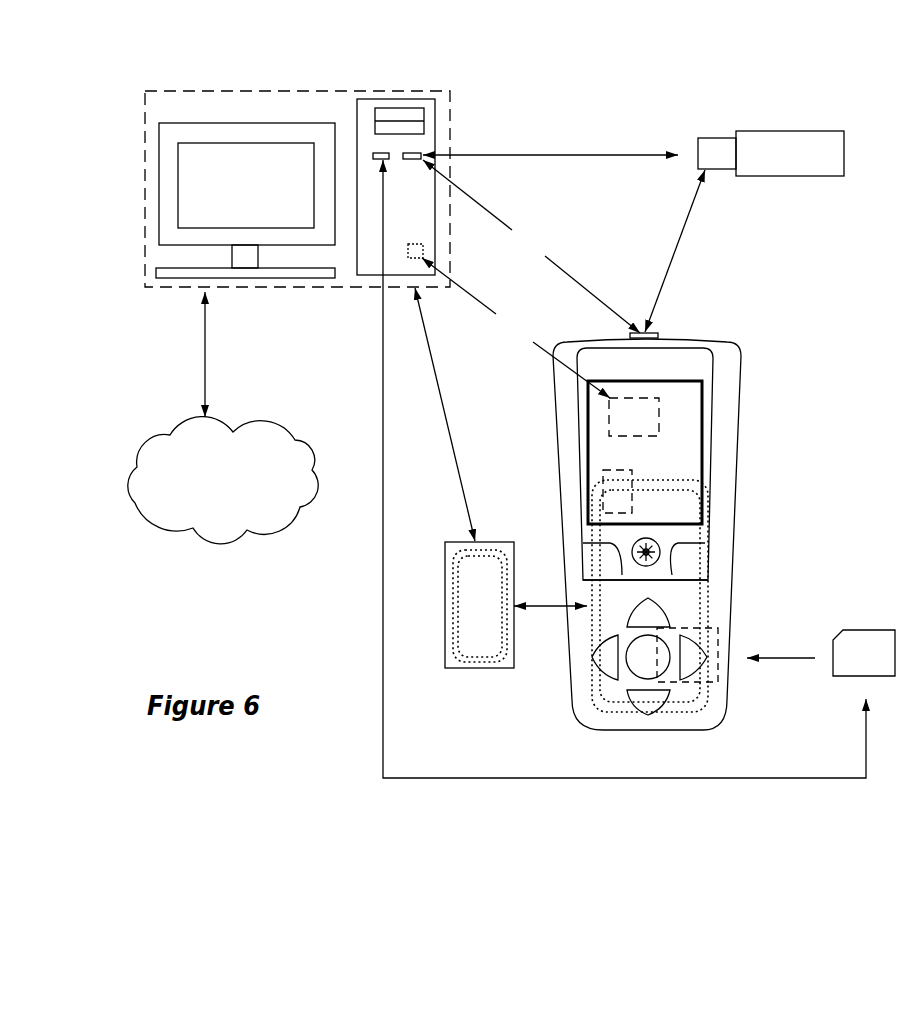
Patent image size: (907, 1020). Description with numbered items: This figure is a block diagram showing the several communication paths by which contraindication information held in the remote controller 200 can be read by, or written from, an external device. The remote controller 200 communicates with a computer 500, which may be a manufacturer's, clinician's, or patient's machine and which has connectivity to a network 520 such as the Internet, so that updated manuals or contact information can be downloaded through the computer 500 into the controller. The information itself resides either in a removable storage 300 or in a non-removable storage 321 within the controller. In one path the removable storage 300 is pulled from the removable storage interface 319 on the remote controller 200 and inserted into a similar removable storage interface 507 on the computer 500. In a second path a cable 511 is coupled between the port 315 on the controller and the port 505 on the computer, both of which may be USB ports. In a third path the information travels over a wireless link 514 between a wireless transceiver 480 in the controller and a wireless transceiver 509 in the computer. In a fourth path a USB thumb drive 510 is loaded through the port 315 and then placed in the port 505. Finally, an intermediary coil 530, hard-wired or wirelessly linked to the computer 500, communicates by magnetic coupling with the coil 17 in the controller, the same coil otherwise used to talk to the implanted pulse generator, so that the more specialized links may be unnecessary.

The computer 500 is at (148, 162).
The removable storage interface 507 is at (379, 152).
The port 505 is at (422, 151).
The wireless transceiver 509 is at (424, 251).
The USB thumb drive 510 is at (771, 153).
The cable 511 is at (531, 246).
The wireless link 514 is at (516, 328).
The port 315 is at (657, 332).
The remote controller 200 is at (753, 500).
The wireless transceiver 480 is at (634, 417).
The non-removable storage 321 is at (627, 469).
The coil 17 is at (710, 581).
The removable storage interface 319 is at (712, 628).
The removable storage 300 is at (864, 653).
The intermediary coil 530 is at (479, 605).
The network 520 is at (223, 480).